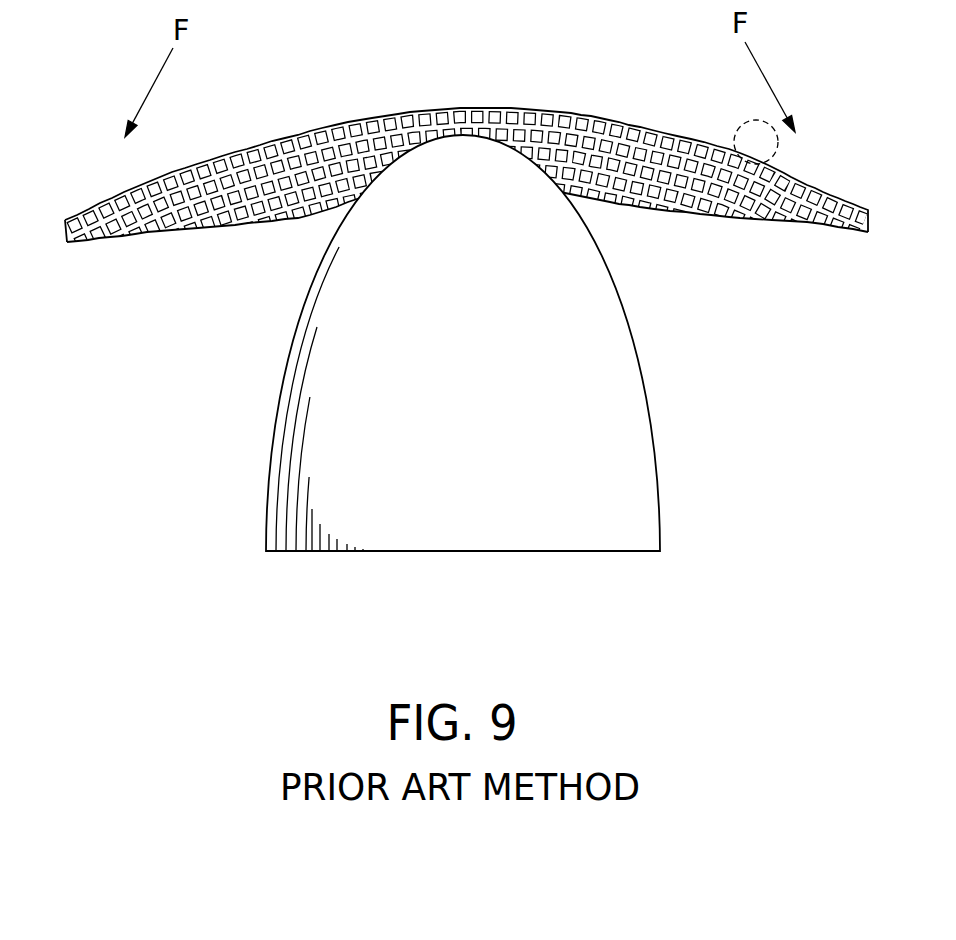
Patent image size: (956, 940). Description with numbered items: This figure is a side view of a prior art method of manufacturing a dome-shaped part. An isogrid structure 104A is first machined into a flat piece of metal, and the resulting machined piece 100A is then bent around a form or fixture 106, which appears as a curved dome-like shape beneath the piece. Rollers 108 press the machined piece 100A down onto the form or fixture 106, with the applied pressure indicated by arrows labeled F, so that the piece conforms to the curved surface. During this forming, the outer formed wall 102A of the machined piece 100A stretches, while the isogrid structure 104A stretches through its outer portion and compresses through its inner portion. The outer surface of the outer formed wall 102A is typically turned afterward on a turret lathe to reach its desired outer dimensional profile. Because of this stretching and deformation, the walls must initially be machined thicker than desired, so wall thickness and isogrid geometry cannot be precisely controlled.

The machined piece 100A is at (618, 126).
The outer formed wall 102A is at (292, 141).
The isogrid structure 104A is at (208, 223).
The form or fixture 106 is at (633, 340).
The rollers 108 is at (753, 120).